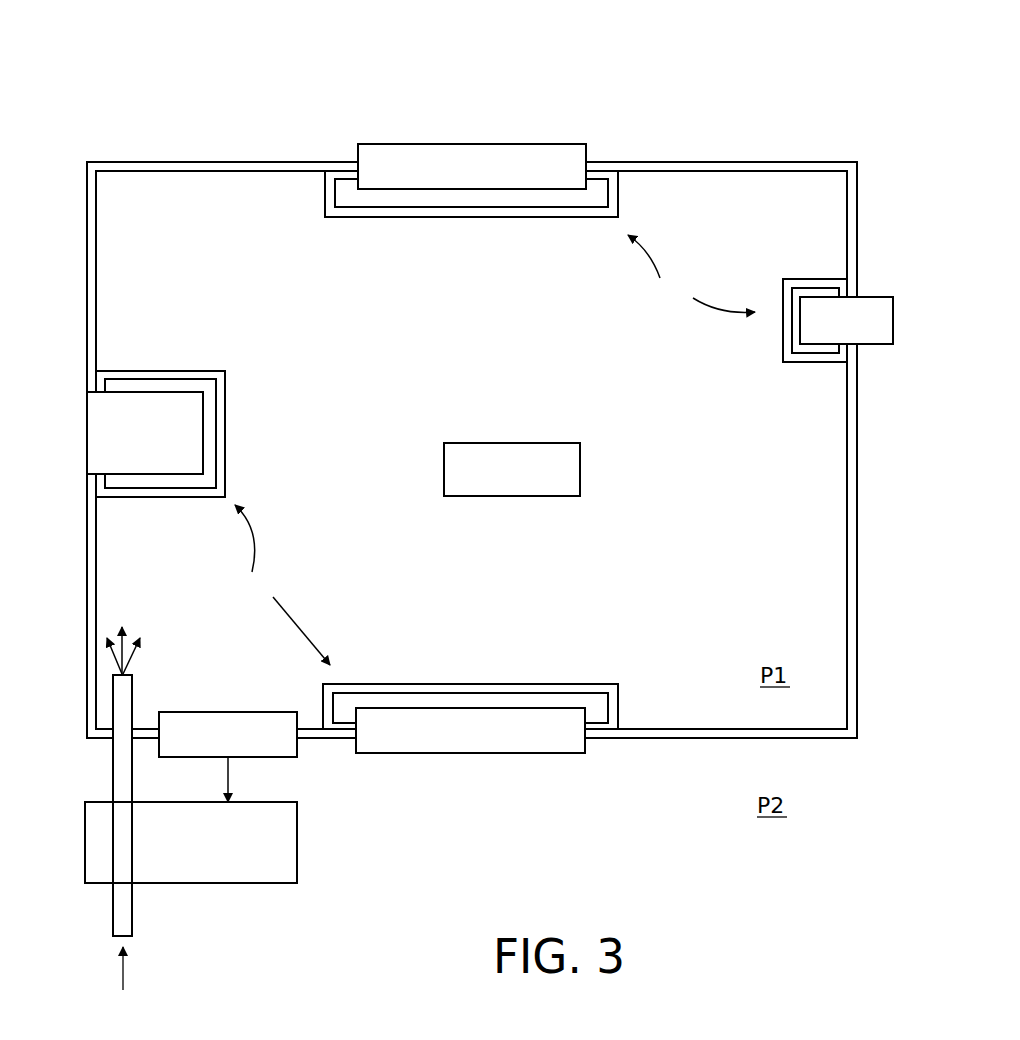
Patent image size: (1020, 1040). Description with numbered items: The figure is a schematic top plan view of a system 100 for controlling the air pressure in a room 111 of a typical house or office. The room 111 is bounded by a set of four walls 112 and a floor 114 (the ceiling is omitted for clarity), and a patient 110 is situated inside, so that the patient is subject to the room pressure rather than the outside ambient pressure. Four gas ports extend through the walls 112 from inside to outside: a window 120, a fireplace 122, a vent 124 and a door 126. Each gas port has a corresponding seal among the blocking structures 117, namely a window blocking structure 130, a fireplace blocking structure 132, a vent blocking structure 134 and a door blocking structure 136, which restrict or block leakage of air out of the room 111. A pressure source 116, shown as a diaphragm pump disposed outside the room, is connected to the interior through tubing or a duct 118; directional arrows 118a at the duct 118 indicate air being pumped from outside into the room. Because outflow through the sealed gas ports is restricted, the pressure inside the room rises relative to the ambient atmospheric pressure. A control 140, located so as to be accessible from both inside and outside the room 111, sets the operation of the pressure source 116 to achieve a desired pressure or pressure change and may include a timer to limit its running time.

The system 100 is at (215, 90).
The patient 110 is at (580, 467).
The room 111 is at (135, 162).
The walls 112 is at (762, 162).
The floor 114 is at (438, 357).
The pressure source 116 is at (297, 836).
The blocking structures 117 is at (494, 450).
The tubing or duct 118 is at (135, 697).
The directional arrows 118a is at (135, 659).
The window 120 is at (482, 144).
The fireplace 122 is at (87, 417).
The vent 124 is at (878, 297).
The door 126 is at (490, 753).
The window blocking structure 130 is at (478, 217).
The fireplace blocking structure 132 is at (116, 371).
The vent blocking structure 134 is at (815, 362).
The door blocking structure 136 is at (490, 684).
The control 140 is at (252, 712).